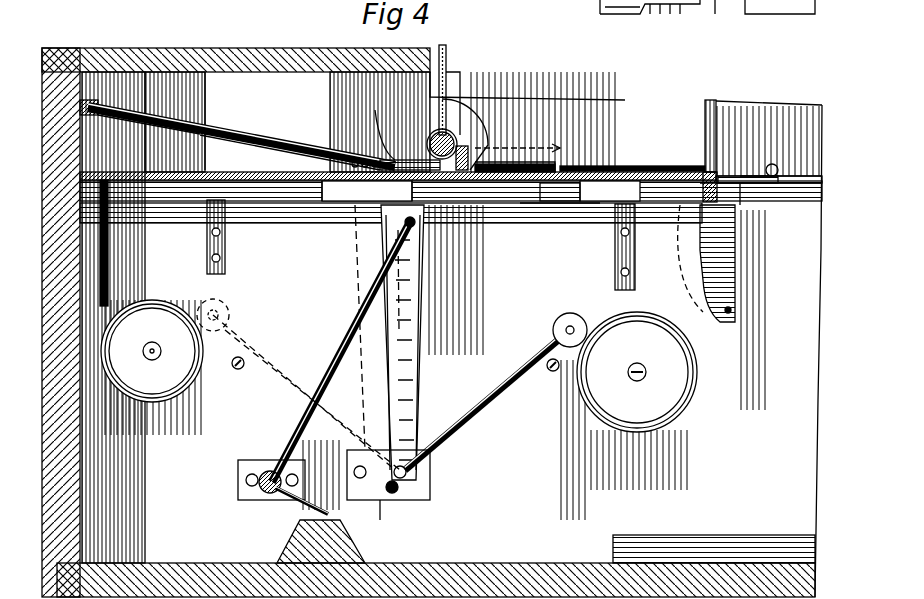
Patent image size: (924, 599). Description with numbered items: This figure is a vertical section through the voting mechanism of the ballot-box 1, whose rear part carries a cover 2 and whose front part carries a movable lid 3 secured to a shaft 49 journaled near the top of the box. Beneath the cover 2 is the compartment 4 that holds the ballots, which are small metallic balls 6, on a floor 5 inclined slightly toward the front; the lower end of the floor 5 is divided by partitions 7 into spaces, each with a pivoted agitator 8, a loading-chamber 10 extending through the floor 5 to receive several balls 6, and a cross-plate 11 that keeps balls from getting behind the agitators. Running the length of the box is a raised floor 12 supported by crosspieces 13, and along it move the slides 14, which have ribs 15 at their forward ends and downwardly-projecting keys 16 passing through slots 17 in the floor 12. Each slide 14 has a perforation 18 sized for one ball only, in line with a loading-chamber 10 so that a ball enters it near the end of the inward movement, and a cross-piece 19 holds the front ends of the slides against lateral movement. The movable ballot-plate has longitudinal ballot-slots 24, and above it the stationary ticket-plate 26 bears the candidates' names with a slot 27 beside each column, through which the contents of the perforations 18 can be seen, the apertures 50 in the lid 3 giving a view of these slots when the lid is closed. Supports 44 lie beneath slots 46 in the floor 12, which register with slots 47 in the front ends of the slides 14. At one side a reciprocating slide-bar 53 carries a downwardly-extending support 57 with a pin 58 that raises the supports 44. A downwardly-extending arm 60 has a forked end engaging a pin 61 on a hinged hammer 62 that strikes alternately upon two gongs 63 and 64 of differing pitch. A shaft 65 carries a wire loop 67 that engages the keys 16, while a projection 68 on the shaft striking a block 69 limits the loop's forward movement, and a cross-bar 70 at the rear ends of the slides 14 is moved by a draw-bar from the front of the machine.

The ballot-box 1 is at (818, 480).
The cover 2 is at (170, 56).
The movable lid 3 is at (450, 105).
The compartment 4 is at (262, 100).
The floor 5 is at (283, 172).
The metallic balls 6 is at (350, 162).
The partitions 7 is at (393, 500).
The agitator 8 is at (378, 135).
The loading-chamber 10 is at (420, 165).
The cross-plate 11 is at (470, 170).
The raised floor 12 is at (315, 201).
The crosspieces 13 is at (478, 210).
The slides 14 is at (197, 172).
The ribs 15 is at (780, 172).
The fingers or keys 16 is at (110, 258).
The slots 17 is at (250, 172).
The perforation 18 is at (365, 203).
The cross-piece 19 is at (712, 160).
The ballot-slots 24 is at (535, 215).
The ticket-plate 26 is at (492, 170).
The slot 27 is at (612, 168).
The supports 44 is at (780, 176).
The slots 46 is at (745, 196).
The slots 47 is at (737, 174).
The shaft 49 is at (456, 136).
The apertures 50 is at (438, 55).
The slide-bar 53 is at (580, 205).
The support 57 is at (736, 290).
The pin 58 is at (731, 311).
The arm 60 is at (410, 332).
The pin 61 is at (420, 500).
The hammer 62 is at (482, 416).
The gong 63 is at (185, 387).
The gong 64 is at (697, 410).
The shaft 65 is at (270, 474).
The loop 67 is at (414, 228).
The projection 68 is at (300, 507).
The block 69 is at (300, 538).
The cross-bar 70 is at (95, 172).